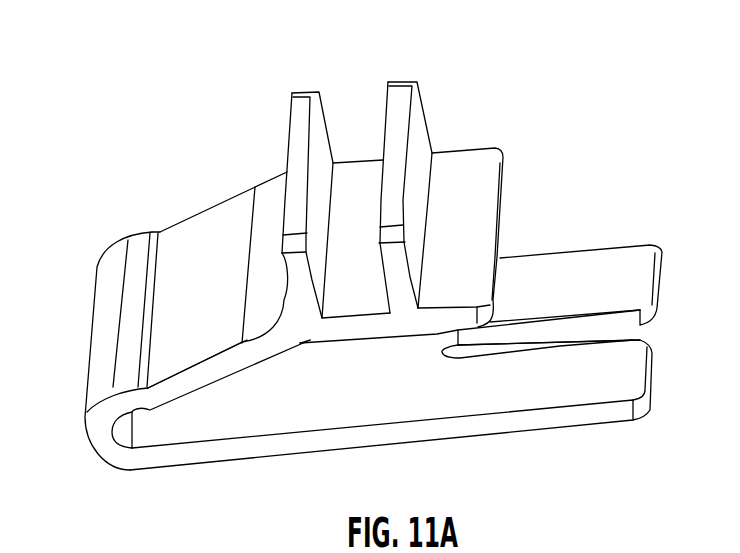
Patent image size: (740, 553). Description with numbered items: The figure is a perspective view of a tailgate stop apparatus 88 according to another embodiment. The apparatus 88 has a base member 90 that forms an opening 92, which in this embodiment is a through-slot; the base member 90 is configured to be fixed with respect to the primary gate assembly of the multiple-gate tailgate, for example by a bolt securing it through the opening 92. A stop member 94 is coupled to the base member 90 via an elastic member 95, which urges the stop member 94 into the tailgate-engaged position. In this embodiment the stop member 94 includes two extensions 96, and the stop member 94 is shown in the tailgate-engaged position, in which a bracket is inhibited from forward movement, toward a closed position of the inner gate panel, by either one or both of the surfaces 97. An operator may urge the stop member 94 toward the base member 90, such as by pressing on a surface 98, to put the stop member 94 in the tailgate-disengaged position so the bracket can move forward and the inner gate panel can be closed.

The apparatus 88 is at (346, 257).
The base member 90 is at (210, 432).
The opening 92 is at (595, 338).
The stop member 94 is at (273, 195).
The elastic member 95 is at (102, 330).
The extension 96 is at (310, 97).
The surface 97 is at (360, 180).
The surface 98 is at (483, 217).